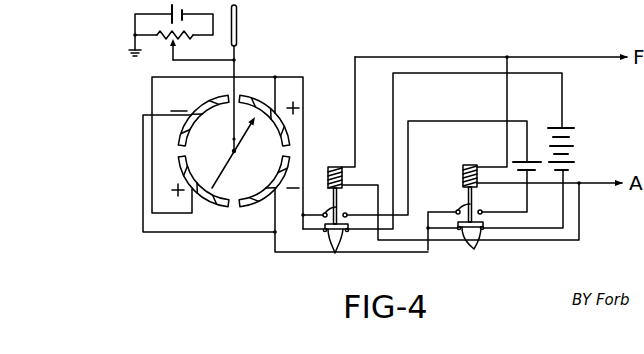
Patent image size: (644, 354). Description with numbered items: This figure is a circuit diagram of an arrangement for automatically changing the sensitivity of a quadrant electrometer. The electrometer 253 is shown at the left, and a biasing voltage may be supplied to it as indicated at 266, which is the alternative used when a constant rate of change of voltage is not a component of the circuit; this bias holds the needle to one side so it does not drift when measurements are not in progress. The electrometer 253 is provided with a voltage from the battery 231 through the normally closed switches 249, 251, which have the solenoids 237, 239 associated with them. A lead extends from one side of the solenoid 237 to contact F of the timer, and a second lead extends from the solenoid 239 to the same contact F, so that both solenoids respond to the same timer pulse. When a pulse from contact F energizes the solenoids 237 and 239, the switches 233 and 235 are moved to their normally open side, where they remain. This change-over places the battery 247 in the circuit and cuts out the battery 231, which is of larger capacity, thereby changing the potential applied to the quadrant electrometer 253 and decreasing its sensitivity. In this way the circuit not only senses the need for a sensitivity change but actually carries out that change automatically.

The biasing voltage supply 266 is at (128, 28).
The electrometer 253 is at (223, 215).
The solenoid 237 is at (328, 170).
The switch 233 is at (334, 216).
The normally closed switch 251 is at (339, 251).
The solenoid 239 is at (463, 172).
The switch 235 is at (485, 203).
The normally closed switch 249 is at (477, 246).
The battery 247 is at (539, 158).
The battery 231 is at (571, 151).